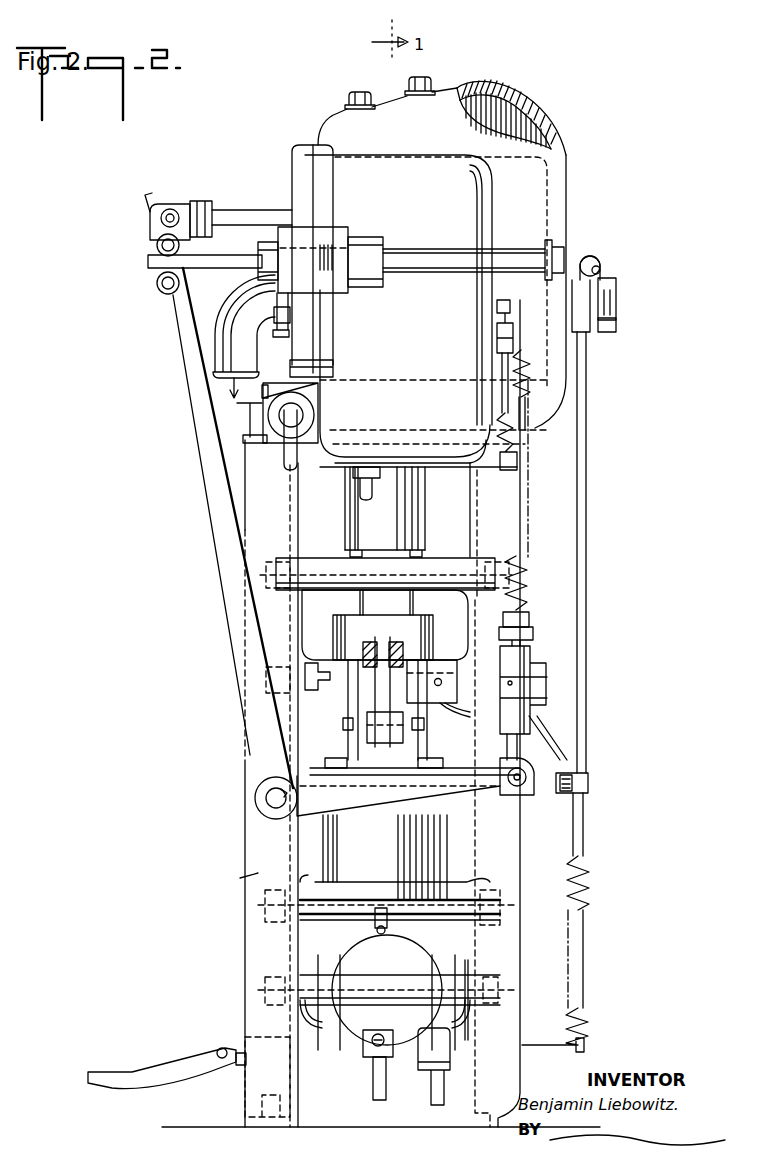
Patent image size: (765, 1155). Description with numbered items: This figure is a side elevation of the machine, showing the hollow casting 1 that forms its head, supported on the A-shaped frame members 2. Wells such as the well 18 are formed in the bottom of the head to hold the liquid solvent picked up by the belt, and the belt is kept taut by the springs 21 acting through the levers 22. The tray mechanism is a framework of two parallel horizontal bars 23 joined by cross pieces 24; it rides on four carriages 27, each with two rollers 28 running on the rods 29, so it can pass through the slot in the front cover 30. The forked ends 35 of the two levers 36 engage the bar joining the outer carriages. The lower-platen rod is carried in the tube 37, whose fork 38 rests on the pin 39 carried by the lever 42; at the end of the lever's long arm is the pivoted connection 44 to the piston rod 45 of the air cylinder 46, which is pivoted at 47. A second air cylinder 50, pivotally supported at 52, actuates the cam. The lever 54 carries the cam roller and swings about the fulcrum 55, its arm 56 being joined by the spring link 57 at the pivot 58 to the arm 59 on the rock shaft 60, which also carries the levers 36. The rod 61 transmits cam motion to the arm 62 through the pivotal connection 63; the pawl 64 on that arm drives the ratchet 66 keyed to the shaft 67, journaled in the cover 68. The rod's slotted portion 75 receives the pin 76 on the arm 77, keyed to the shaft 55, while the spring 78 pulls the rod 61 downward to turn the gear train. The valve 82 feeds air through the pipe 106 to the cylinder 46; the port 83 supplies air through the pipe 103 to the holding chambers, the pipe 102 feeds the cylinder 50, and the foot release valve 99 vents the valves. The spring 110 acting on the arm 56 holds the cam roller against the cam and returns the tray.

The hollow casting 1 is at (545, 116).
The A-shaped frame members 2 is at (521, 880).
The well 18 is at (338, 452).
The springs 21 is at (512, 426).
The levers 22 is at (500, 383).
The parallel horizontal bars 23 is at (202, 237).
The cross pieces 24 is at (240, 211).
The carriages 27 is at (212, 190).
The rollers 28 is at (157, 283).
The rods 29 is at (216, 270).
The cover 30 is at (300, 157).
The forked ends 35 is at (150, 216).
The levers 36 is at (203, 452).
The tube 37 is at (412, 604).
The fork 38 is at (340, 620).
The pin 39 is at (330, 760).
The lever 42 is at (365, 712).
The pivoted connection 44 is at (345, 728).
The piston rod 45 is at (383, 640).
The air cylinder 46 is at (330, 850).
The pivot 47 is at (352, 905).
The air cylinder 50 is at (350, 1030).
The pivotal support 52 is at (368, 992).
The lever 54 is at (438, 662).
The fulcrum 55 is at (318, 672).
The arm 56 is at (526, 616).
The spring link 57 is at (535, 718).
The pivot connection 58 is at (530, 632).
The arm 59 is at (372, 808).
The rock shaft 60 is at (258, 800).
The rod 61 is at (585, 390).
The arm 62 is at (580, 280).
The pivotal connection 63 is at (612, 325).
The pawl 64 is at (594, 265).
The ratchet 66 is at (600, 270).
The shaft 67 is at (616, 294).
The cover 68 is at (556, 198).
The slotted portion 75 is at (580, 832).
The pin 76 is at (589, 778).
The arm 77 is at (557, 742).
The spring 78 is at (587, 890).
The valve 82 is at (422, 1052).
The port 83 is at (365, 1057).
The foot release valve 99 is at (246, 1090).
The pipe 102 is at (378, 1036).
The pipe 103 is at (372, 1088).
The pipe 106 is at (386, 933).
The spring 110 is at (522, 582).